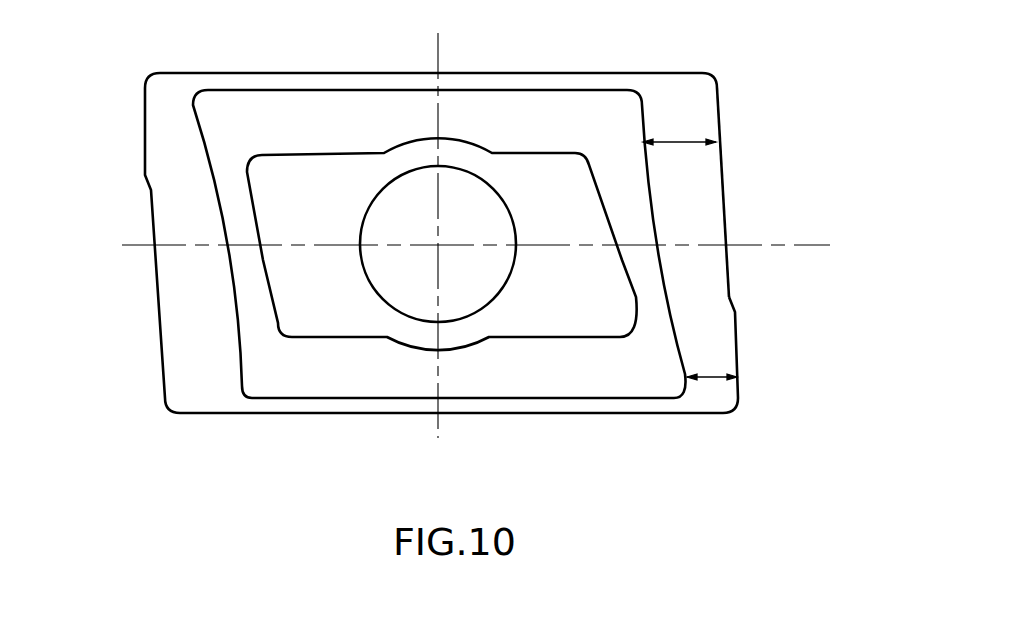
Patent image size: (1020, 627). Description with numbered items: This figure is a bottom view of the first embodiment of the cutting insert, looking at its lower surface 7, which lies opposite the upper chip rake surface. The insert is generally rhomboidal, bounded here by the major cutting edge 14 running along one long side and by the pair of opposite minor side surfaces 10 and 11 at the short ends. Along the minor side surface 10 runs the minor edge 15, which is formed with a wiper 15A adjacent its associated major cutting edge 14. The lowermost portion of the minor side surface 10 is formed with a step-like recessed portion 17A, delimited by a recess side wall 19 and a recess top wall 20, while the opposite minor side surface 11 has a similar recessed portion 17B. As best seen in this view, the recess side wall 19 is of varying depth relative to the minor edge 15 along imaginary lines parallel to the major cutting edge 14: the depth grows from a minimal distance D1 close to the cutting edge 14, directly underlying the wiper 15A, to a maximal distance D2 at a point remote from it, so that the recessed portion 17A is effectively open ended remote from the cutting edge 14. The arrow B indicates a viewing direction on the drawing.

The lower surface 7 is at (284, 132).
The minor side surface 10 is at (790, 206).
The minor side surface 11 is at (133, 310).
The major cutting edge 14 is at (271, 418).
The minor edge 15 is at (727, 192).
The wiper 15A is at (739, 350).
The recessed portion 17A is at (700, 273).
The recessed portion 17B is at (192, 278).
The recess side wall 19 is at (643, 123).
The recess top wall 20 is at (702, 205).
The minimal distance D1 is at (712, 392).
The maximal distance D2 is at (684, 141).
The direction B is at (703, 446).